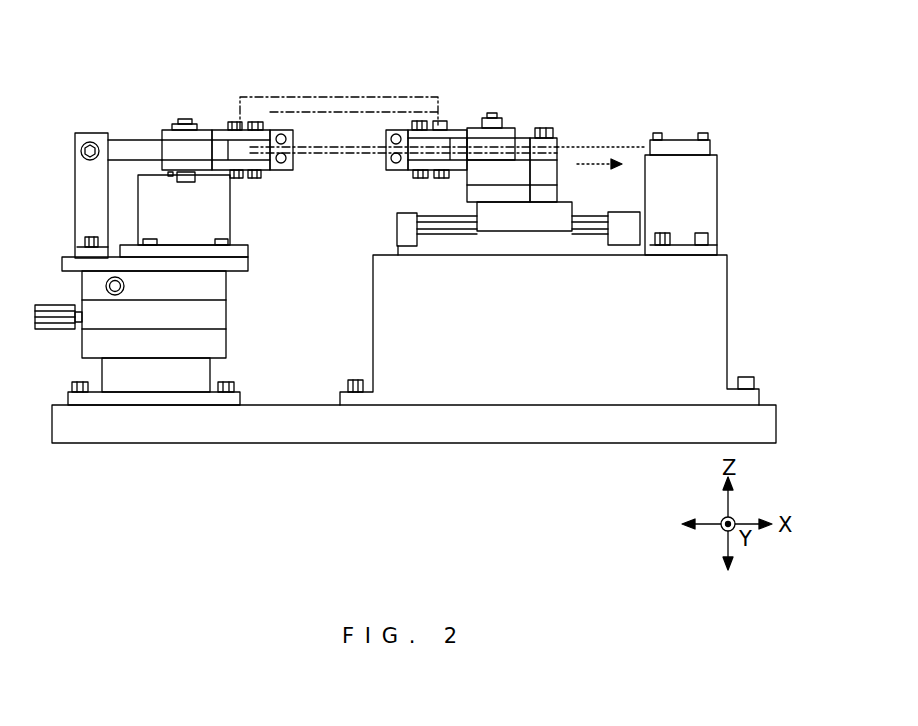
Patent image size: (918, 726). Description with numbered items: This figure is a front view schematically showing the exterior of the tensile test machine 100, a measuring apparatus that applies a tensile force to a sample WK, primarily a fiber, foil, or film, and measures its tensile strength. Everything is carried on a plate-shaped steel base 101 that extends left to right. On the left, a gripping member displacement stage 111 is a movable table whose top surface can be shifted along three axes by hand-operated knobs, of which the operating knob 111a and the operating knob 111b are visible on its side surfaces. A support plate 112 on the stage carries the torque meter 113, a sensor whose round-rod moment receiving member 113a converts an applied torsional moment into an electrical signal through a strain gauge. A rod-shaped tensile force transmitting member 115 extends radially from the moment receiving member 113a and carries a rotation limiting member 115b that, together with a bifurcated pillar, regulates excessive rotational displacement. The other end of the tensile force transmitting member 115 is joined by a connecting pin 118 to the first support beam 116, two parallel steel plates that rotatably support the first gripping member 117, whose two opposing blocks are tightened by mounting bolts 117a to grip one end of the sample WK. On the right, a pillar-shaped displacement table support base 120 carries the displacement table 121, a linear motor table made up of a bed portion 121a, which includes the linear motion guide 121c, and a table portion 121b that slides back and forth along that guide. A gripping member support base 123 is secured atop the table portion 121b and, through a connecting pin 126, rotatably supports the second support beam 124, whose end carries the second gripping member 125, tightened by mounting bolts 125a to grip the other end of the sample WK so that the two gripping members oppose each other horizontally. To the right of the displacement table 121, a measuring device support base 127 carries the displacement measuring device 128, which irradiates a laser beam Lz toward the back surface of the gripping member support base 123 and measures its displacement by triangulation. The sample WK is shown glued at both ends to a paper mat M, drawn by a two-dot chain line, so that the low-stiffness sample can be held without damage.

The tensile test machine 100 is at (291, 43).
The base 101 is at (295, 404).
The gripping member displacement stage 111 is at (228, 316).
The operating knob 111a is at (125, 287).
The operating knob 111b is at (42, 303).
The support plate 112 is at (245, 272).
The torque meter 113 is at (232, 229).
The moment receiving member 113a is at (215, 176).
The tensile force transmitting member 115 is at (165, 142).
The rotation limiting member 115b is at (115, 133).
The first support beam 116 is at (215, 130).
The first gripping member 117 is at (293, 166).
The mounting bolts 117a is at (281, 130).
The connecting pin 118 is at (185, 119).
The displacement table support base 120 is at (373, 346).
The displacement table 121 is at (393, 229).
The bed portion 121a is at (397, 240).
The table portion 121b is at (477, 210).
The linear motion guide 121c is at (598, 212).
The gripping member support base 123 is at (558, 172).
The second support beam 124 is at (458, 121).
The second gripping member 125 is at (393, 130).
The mounting bolts 125a is at (397, 130).
The connecting pin 126 is at (492, 118).
The measuring device support base 127 is at (718, 198).
The displacement measuring device 128 is at (681, 140).
The sample WK is at (350, 147).
The mat M is at (344, 97).
The laser beam Lz is at (627, 147).